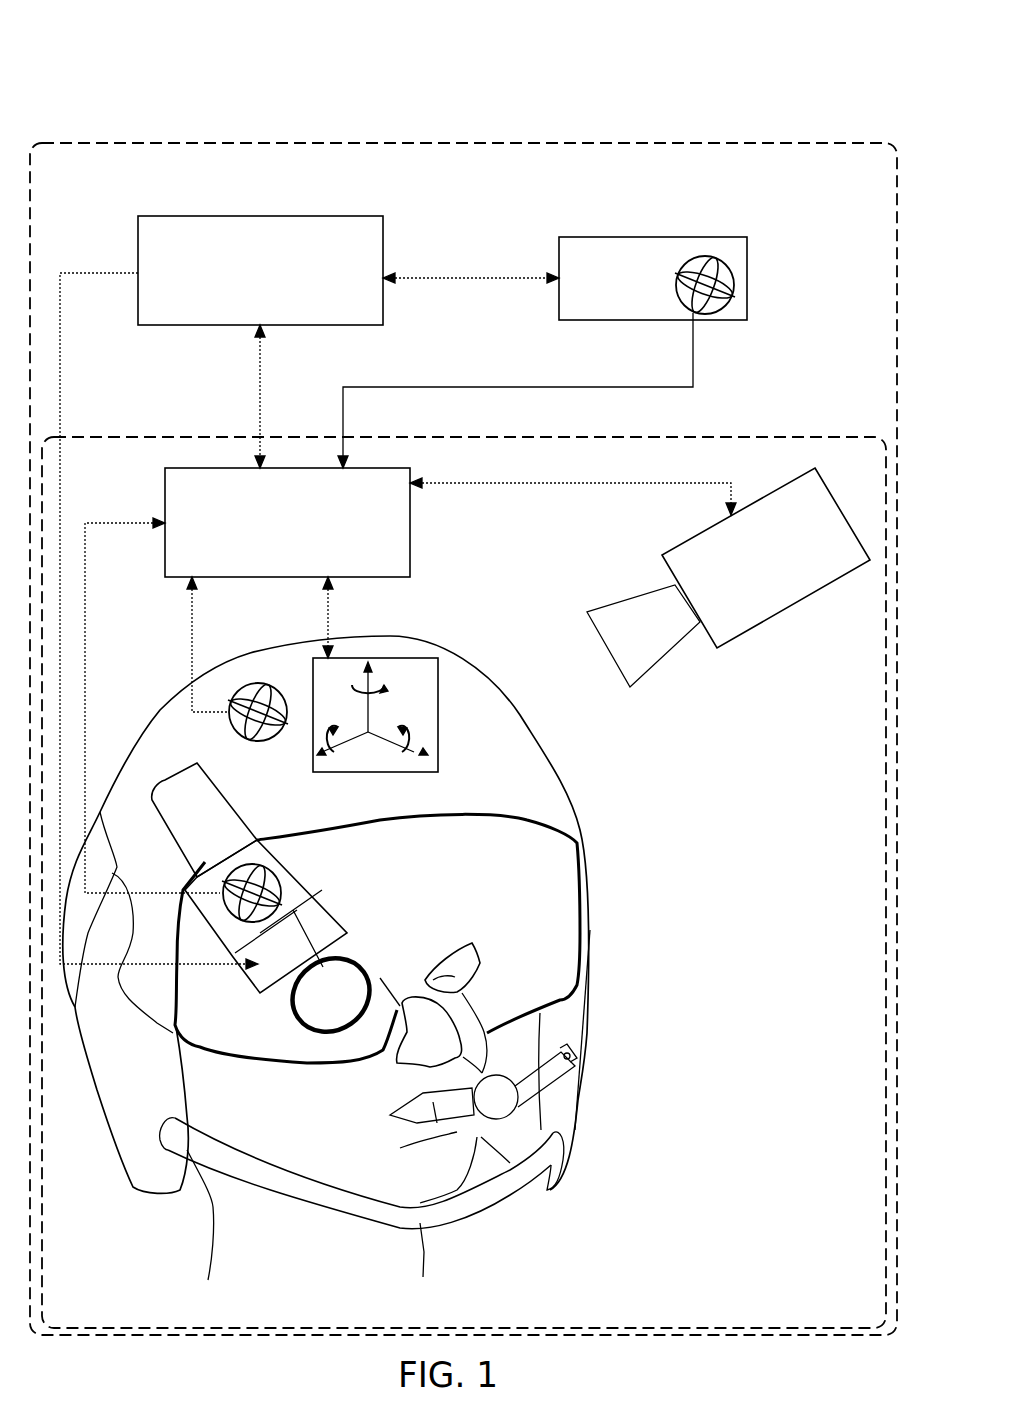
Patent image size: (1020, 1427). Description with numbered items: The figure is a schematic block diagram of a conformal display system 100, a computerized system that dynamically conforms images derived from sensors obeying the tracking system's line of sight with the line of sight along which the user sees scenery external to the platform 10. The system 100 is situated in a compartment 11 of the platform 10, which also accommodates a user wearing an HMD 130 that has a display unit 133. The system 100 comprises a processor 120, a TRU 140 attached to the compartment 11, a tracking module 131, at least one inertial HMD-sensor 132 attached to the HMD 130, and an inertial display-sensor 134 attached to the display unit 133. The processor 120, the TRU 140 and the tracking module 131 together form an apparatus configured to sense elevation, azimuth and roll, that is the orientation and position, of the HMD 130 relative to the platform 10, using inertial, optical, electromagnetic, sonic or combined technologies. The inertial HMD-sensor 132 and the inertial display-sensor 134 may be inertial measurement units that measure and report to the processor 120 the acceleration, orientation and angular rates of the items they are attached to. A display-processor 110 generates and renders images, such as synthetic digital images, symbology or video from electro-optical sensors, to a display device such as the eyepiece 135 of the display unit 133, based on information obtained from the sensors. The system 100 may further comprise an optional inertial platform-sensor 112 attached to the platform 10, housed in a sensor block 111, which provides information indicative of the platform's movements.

The conformal display system 100 is at (799, 76).
The platform 10 is at (93, 143).
The compartment 11 is at (858, 437).
The display-processor 110 is at (383, 303).
The sensor 111 is at (559, 246).
The inertial platform-sensor 112 is at (734, 285).
The processor 120 is at (410, 523).
The HMD 130 is at (580, 755).
The tracking module 131 is at (438, 672).
The inertial HMD-sensor 132 is at (233, 683).
The display unit 133 is at (183, 780).
The inertial display-sensor 134 is at (262, 865).
The eyepiece 135 is at (360, 962).
The TRU 140 is at (818, 600).